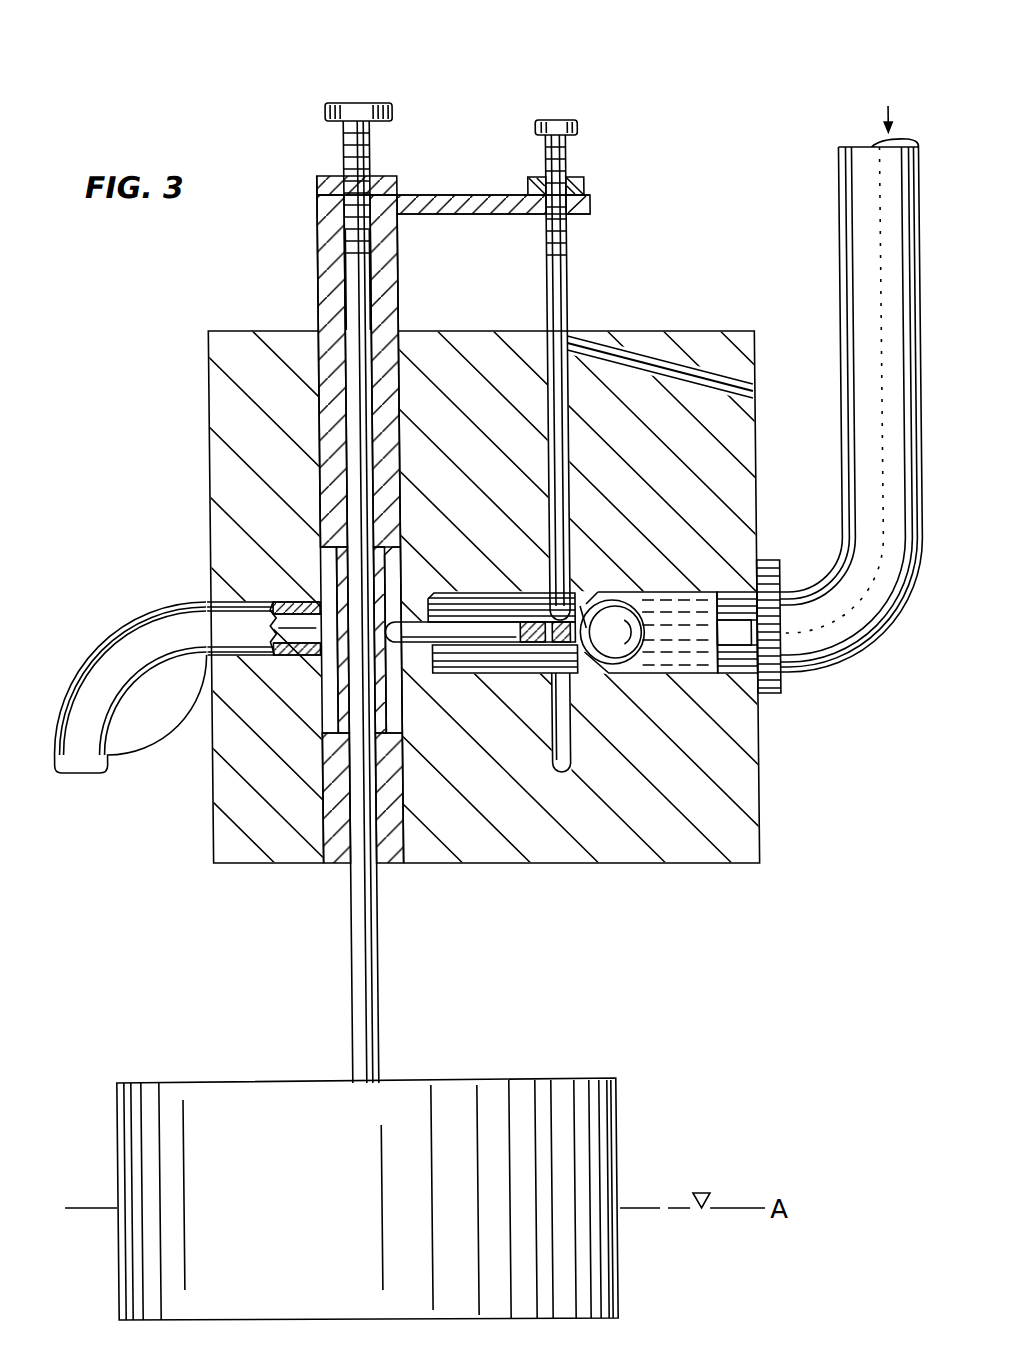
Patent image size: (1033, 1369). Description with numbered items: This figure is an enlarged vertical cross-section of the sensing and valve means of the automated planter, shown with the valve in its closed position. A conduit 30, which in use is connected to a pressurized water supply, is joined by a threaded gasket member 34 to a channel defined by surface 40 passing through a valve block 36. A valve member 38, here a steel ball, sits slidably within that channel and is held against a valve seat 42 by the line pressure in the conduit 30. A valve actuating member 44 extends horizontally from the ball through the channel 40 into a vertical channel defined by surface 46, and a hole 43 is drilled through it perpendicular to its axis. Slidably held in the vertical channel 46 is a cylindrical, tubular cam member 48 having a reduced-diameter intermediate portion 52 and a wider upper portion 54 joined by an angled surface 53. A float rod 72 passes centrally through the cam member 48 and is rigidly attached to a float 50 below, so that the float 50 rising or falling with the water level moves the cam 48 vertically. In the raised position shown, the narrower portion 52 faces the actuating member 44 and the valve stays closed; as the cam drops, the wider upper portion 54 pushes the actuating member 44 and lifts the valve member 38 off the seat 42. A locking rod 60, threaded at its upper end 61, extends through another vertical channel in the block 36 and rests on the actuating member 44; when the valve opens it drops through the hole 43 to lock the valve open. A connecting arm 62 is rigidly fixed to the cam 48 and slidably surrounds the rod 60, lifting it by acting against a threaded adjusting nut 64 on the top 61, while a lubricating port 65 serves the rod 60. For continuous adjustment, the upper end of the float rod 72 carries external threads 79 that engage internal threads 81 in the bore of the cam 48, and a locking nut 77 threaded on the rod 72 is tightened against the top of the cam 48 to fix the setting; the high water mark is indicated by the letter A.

The conduit 30 is at (833, 655).
The threaded gasket member 34 is at (765, 559).
The valve block 36 is at (742, 792).
The valve member 38 is at (610, 609).
The channel surface 40 is at (653, 661).
The valve seat 42 is at (574, 604).
The hole 43 is at (533, 637).
The valve actuating member 44 is at (453, 631).
The vertical channel surface 46 is at (392, 572).
The cam member 48 is at (395, 297).
The float 50 is at (590, 1074).
The intermediate portion 52 is at (331, 557).
The angled surface 53 is at (379, 555).
The upper portion 54 is at (395, 515).
The locking rod 60 is at (566, 248).
The threaded upper end 61 is at (573, 148).
The connecting arm 62 is at (450, 200).
The threaded adjusting nut 64 is at (583, 184).
The lubricating port 65 is at (686, 369).
The float rod 72 is at (382, 107).
The locking nut 77 is at (385, 190).
The external threads 79 is at (342, 244).
The internal threads 81 is at (370, 220).